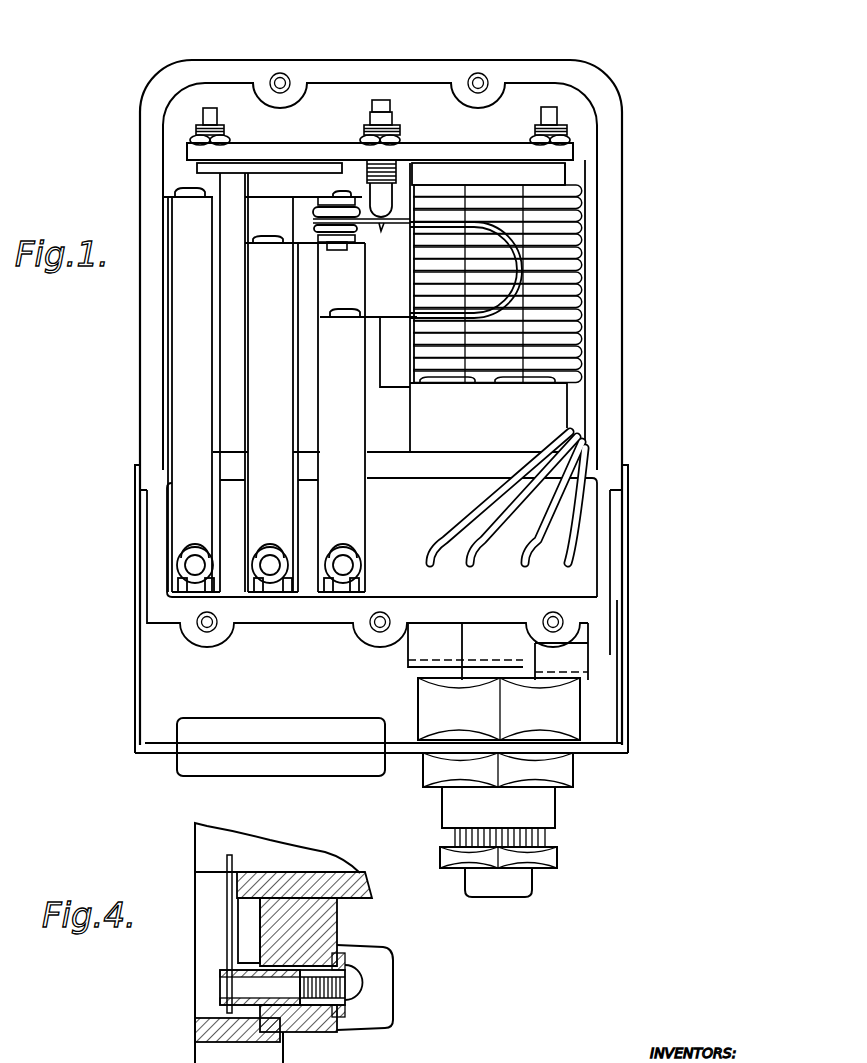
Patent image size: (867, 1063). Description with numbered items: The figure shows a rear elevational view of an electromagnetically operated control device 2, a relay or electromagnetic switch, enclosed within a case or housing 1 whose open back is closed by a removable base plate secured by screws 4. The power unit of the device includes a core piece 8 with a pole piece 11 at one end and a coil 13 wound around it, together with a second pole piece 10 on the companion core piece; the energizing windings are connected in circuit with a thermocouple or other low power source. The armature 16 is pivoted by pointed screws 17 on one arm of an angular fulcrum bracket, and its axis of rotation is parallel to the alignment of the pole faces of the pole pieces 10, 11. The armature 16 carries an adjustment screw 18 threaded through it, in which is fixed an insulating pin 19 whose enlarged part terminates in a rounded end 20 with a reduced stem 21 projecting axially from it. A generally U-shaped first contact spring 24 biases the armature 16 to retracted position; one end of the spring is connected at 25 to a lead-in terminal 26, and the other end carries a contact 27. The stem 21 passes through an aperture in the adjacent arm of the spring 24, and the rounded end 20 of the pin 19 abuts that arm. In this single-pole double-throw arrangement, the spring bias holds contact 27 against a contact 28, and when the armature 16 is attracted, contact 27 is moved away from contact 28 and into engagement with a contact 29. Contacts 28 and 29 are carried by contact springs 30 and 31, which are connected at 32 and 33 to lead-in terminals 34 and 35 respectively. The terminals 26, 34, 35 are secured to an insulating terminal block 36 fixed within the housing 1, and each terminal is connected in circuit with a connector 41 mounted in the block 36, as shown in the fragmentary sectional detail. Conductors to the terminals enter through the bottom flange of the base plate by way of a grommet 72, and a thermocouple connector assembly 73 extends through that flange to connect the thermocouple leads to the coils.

In FIG. 1, the case or housing 1 is at (150, 82).
In FIG. 1, the electromagnetically operated control device 2 is at (352, 27).
In FIG. 1, the screws 4 is at (268, 492).
In FIG. 1, the core piece 8 is at (522, 239).
In FIG. 1, the pole piece 10 is at (268, 167).
In FIG. 1, the pole piece 11 is at (477, 173).
In FIG. 1, the coil 13 is at (578, 263).
In FIG. 1, the armature 16 is at (312, 152).
In FIG. 1, the pointed screws 17 is at (217, 117).
In FIG. 1, the adjustment screw 18 is at (400, 163).
In FIG. 1, the insulating pin 19 is at (388, 192).
In FIG. 1, the rounded end 20 is at (384, 231).
In FIG. 1, the reduced stem 21 is at (379, 229).
In FIG. 1, the first contact spring 24 is at (527, 288).
In FIG. 1, the connection 25 is at (343, 318).
In FIG. 1, the lead-in terminal 26 is at (347, 507).
In FIG. 1, the contact 27 is at (317, 223).
In FIG. 1, the contact 28 is at (340, 195).
In FIG. 1, the contact 29 is at (336, 250).
In FIG. 1, the contact spring 30 is at (253, 197).
In FIG. 1, the contact spring 31 is at (307, 250).
In FIG. 1, the connection 32 is at (197, 190).
In FIG. 1, the connection 33 is at (263, 240).
In FIG. 1, the lead-in terminal 34 is at (180, 374).
In FIG. 1, the lead-in terminal 35 is at (262, 505).
In FIG. 4, the lead-in terminal 35 is at (228, 940).
In FIG. 1, the insulating terminal block 36 is at (443, 452).
In FIG. 4, the insulating terminal block 36 is at (323, 915).
In FIG. 4, the connector 41 is at (305, 1033).
In FIG. 1, the grommet 72 is at (325, 768).
In FIG. 1, the thermocouple connector assembly 73 is at (457, 826).